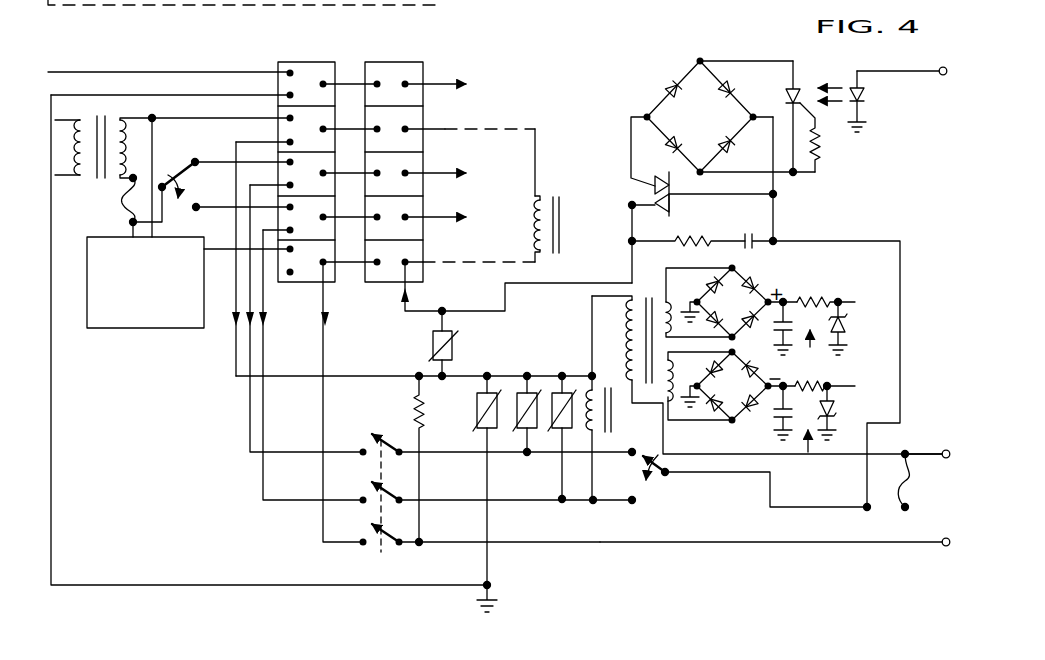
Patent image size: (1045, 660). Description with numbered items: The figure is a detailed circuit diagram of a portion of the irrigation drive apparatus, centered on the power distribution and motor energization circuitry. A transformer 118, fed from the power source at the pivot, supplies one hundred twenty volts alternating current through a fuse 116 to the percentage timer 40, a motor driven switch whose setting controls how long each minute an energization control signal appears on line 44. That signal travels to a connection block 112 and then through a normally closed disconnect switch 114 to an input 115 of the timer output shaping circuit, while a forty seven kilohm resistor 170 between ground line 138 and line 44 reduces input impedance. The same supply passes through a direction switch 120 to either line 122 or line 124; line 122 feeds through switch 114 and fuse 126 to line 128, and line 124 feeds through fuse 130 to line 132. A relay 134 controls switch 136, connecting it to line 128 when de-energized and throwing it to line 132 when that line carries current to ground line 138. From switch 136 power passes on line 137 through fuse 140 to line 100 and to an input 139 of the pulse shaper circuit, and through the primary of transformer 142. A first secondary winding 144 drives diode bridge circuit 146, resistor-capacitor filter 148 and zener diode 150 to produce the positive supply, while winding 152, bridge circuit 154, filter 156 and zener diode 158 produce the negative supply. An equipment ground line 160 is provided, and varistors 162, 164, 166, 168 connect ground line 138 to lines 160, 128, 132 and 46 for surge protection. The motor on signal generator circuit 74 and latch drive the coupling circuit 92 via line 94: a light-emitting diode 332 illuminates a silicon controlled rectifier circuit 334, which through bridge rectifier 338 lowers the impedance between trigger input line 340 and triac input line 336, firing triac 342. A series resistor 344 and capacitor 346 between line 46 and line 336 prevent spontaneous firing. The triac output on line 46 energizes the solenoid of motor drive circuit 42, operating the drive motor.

The percentage timer 40 is at (145, 329).
The motor drive circuit 42 is at (566, 216).
The percentage timer output line 44 is at (270, 284).
The drive control output line 46 is at (562, 284).
The motor on signal generator circuit 74 is at (582, 0).
The coupling circuit 92 is at (802, 74).
The latch output line 94 is at (942, 76).
The power line 100 is at (922, 454).
The connection block 112 is at (407, 51).
The disconnect switch 114 is at (363, 508).
The input of timer output shaping circuit 115 is at (946, 546).
The fuse 116 is at (120, 213).
The transformer 118 is at (94, 184).
The direction switch 120 is at (196, 211).
The forward line 122 is at (268, 163).
The reverse line 124 is at (265, 235).
The fuse 126 is at (456, 452).
The line 128 is at (615, 452).
The fuse 130 is at (451, 500).
The line 132 is at (352, 501).
The relay 134 is at (618, 401).
The relay switch 136 is at (660, 478).
The line 137 is at (744, 474).
The alternating current ground line 138 is at (238, 142).
The input of pulse shaper circuit 139 is at (946, 458).
The fuse 140 is at (867, 485).
The transformer 142 is at (648, 306).
The first secondary winding 144 is at (695, 302).
The diode bridge circuit 146 is at (770, 290).
The resistor-capacitor filter 148 is at (797, 336).
The zener diode 150 is at (846, 330).
The transformer winding 152 is at (720, 397).
The bridge circuit 154 is at (730, 417).
The resistor-capacitor filter 156 is at (797, 432).
The zener diode 158 is at (836, 412).
The equipment ground line 160 is at (125, 94).
The varistor 162 is at (477, 399).
The varistor 164 is at (515, 432).
The varistor 166 is at (558, 431).
The varistor 168 is at (432, 342).
The resistor 170 is at (418, 405).
The light-emitting diode 332 is at (862, 94).
The silicon controlled rectifier circuit 334 is at (786, 96).
The triac input line 336 is at (774, 220).
The bridge rectifier 338 is at (667, 102).
The trigger input line 340 is at (630, 156).
The triac 342 is at (654, 188).
The resistor 344 is at (653, 245).
The capacitor 346 is at (748, 236).